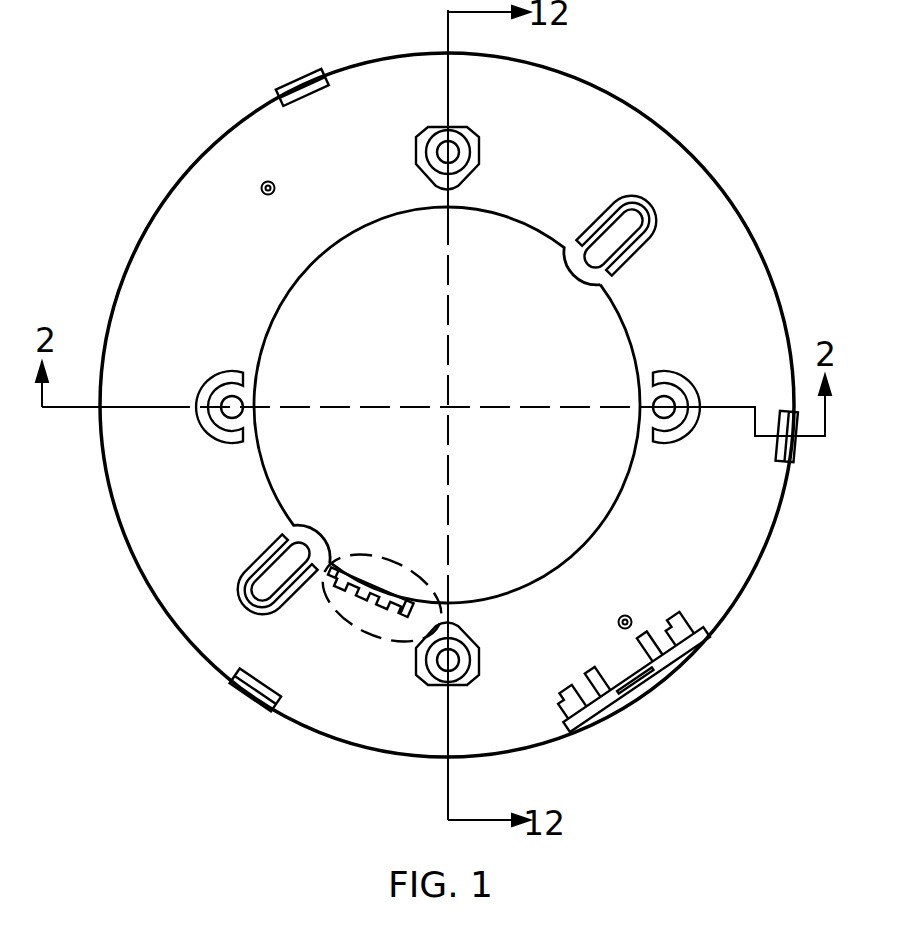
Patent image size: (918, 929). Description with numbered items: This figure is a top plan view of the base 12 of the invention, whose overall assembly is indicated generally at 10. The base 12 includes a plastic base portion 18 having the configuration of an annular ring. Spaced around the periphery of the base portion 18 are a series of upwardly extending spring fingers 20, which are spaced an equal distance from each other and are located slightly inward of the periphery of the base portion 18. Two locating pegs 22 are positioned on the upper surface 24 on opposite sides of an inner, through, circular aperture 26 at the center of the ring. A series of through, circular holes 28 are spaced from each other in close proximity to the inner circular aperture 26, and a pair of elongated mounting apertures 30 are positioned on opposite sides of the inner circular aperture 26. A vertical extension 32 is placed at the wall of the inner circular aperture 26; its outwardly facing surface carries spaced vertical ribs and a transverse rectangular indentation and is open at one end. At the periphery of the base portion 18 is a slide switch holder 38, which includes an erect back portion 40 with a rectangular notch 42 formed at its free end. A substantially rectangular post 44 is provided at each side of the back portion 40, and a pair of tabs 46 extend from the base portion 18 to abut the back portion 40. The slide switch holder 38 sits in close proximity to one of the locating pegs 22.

The retainer assembly 10 is at (402, 645).
The base 12 is at (92, 494).
The base portion 18 is at (347, 743).
The spring fingers 20 is at (300, 83).
The locating pegs 22 is at (263, 185).
The upper surface 24 is at (155, 242).
The inner circular aperture 26 is at (500, 262).
The through circular holes 28 is at (446, 152).
The elongated mounting apertures 30 is at (627, 223).
The vertical extension 32 is at (373, 593).
The slide switch holder 38 is at (708, 676).
The back portion 40 is at (616, 682).
The rectangular notch 42 is at (645, 695).
The rectangular post 44 is at (682, 625).
The tabs 46 is at (662, 675).